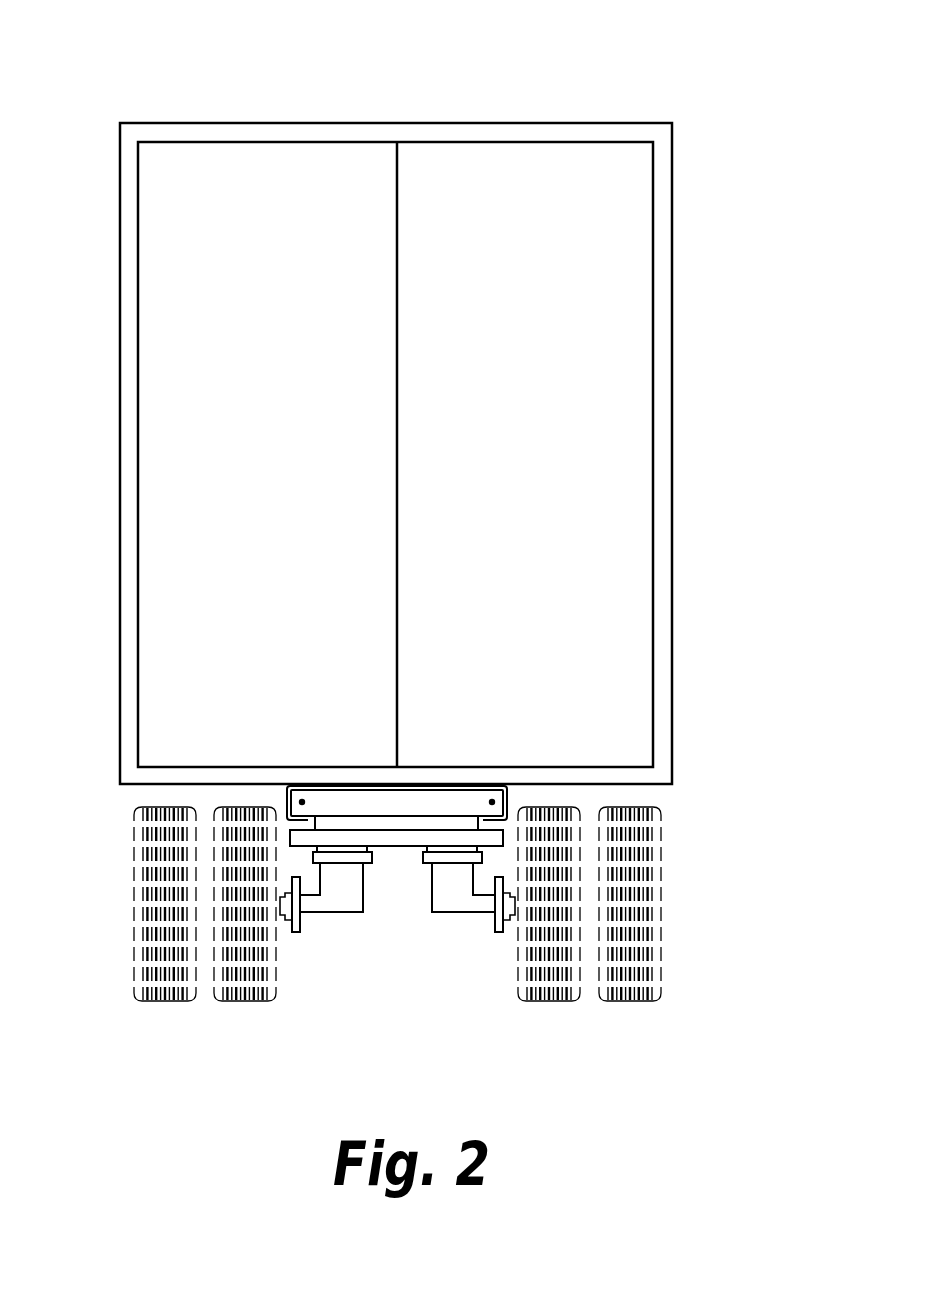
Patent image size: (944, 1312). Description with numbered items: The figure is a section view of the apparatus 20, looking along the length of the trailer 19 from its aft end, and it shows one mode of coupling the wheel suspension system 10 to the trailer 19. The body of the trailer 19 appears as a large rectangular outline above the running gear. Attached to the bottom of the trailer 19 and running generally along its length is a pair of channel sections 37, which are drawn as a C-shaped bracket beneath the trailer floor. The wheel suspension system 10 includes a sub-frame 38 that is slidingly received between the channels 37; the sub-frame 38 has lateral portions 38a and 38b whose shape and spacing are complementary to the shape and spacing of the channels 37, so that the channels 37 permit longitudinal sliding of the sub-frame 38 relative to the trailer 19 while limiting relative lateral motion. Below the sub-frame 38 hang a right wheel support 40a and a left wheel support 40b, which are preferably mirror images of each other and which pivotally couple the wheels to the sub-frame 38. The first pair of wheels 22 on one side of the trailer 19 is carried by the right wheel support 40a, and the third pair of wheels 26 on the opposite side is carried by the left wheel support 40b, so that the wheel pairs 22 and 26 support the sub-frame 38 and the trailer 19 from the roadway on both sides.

The wheel suspension system 10 is at (390, 838).
The trailer 19 is at (120, 484).
The apparatus 20 is at (741, 127).
The first pair of wheels 22 is at (152, 852).
The third pair of wheels 26 is at (627, 965).
The channel sections 37 is at (312, 818).
The sub-frame 38 is at (432, 803).
The lateral portion 38a is at (302, 802).
The lateral portion 38b is at (492, 802).
The right wheel support 40a is at (343, 890).
The left wheel support 40b is at (452, 893).